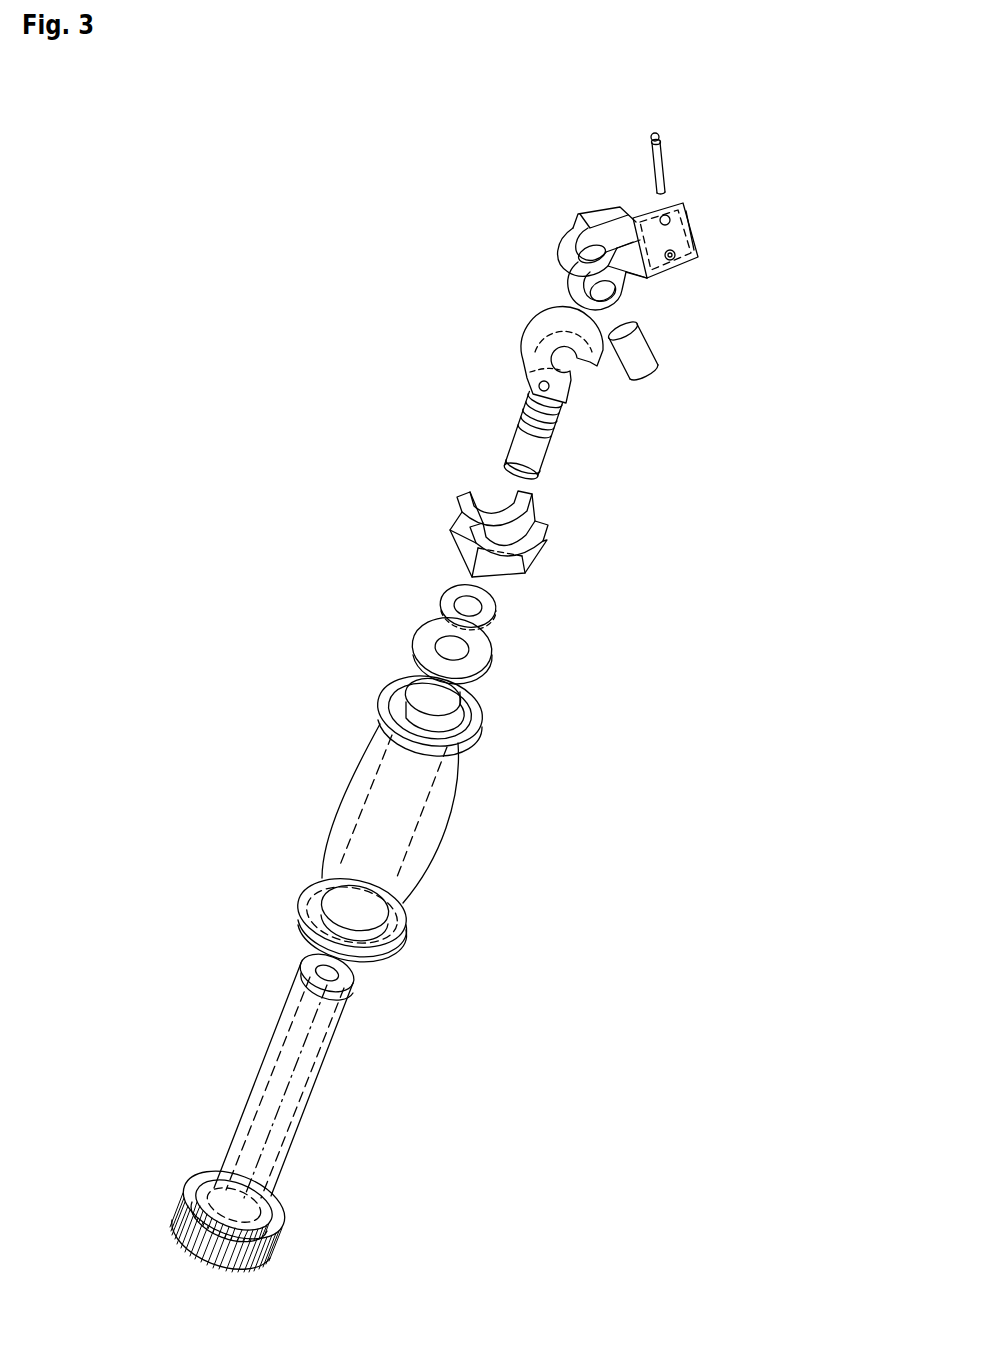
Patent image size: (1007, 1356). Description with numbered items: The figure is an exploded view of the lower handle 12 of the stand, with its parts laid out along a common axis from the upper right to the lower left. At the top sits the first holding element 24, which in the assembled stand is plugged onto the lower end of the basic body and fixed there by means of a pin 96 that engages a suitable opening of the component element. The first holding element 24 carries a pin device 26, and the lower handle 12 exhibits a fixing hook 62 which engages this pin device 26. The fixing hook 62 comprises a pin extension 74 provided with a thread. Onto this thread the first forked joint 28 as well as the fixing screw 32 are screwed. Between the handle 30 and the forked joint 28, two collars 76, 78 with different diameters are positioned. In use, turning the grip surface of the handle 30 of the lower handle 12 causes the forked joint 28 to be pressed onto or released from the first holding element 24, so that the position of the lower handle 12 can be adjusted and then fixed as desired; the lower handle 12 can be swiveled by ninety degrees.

The lower handle 12 is at (574, 906).
The first holding element 24 is at (597, 221).
The pin device 26 is at (653, 382).
The first forked joint 28 is at (457, 502).
The handle 30 is at (335, 798).
The fixing screw 32 is at (252, 1087).
The fixing hook 62 is at (522, 366).
The pin extension 74 is at (522, 425).
The collar 76 is at (413, 635).
The collar 78 is at (442, 602).
The pin 96 is at (657, 138).